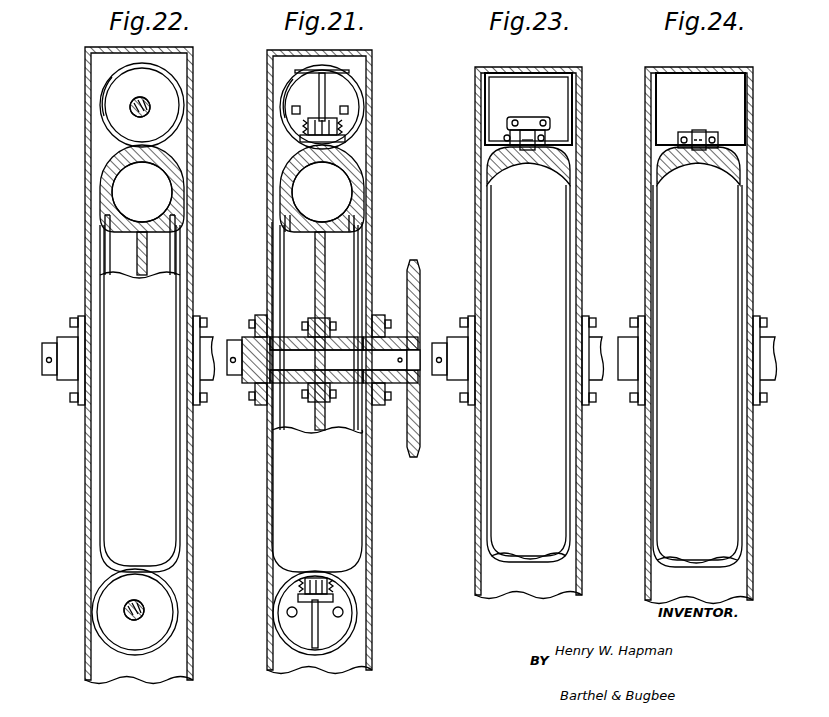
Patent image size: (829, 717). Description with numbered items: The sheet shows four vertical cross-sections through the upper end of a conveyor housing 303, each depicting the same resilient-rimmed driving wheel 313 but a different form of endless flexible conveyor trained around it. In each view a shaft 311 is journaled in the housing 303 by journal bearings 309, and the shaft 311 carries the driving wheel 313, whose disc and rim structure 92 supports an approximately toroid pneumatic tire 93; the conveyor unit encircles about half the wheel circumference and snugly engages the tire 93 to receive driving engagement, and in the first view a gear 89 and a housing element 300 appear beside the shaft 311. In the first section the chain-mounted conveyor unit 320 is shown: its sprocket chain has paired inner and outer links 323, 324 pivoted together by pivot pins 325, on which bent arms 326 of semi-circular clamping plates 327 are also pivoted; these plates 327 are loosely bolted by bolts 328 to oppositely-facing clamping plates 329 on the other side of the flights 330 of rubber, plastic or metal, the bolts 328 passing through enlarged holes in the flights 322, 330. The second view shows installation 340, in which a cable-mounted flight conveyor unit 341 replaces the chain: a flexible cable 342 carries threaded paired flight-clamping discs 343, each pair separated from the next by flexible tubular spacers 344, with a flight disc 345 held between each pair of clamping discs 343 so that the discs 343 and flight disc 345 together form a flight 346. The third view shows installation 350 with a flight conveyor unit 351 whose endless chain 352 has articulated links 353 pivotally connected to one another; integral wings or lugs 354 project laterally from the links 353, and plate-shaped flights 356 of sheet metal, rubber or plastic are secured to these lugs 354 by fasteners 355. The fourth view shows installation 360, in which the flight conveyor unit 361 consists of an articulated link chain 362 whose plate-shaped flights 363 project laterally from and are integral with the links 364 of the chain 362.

In FIG. 21, the gear wheel 89 is at (418, 294).
In FIG. 22, the disc and rim structure 92 is at (134, 254).
In FIG. 21, the disc and rim structure 92 is at (326, 256).
In FIG. 22, the pneumatic tire 93 is at (113, 205).
In FIG. 21, the pneumatic tire 93 is at (352, 192).
In FIG. 21, the housing 300 is at (260, 220).
In FIG. 21, the housing 303 is at (268, 133).
In FIG. 22, the journal bearing 309 is at (63, 336).
In FIG. 21, the journal bearing 309 is at (254, 332).
In FIG. 23, the journal bearing 309 is at (454, 400).
In FIG. 24, the journal bearing 309 is at (624, 336).
In FIG. 21, the shaft 311 is at (322, 360).
In FIG. 22, the driving wheel 313 is at (100, 176).
In FIG. 21, the driving wheel 313 is at (365, 156).
In FIG. 23, the driving wheel 313 is at (548, 236).
In FIG. 24, the driving wheel 313 is at (724, 228).
In FIG. 21, the endless flexible conveyor unit 320 is at (290, 143).
In FIG. 21, the flight 322 is at (287, 82).
In FIG. 21, the inner link 323 is at (323, 118).
In FIG. 21, the outer link 324 is at (338, 104).
In FIG. 21, the pivot pin 325 is at (345, 138).
In FIG. 21, the bent arm 326 is at (340, 128).
In FIG. 21, the semi-circular clamping plate 327 is at (330, 82).
In FIG. 21, the bolt 328 is at (292, 110).
In FIG. 21, the clamping plate 329 is at (296, 628).
In FIG. 21, the flight 330 is at (345, 75).
In FIG. 22, the installation 340 is at (84, 62).
In FIG. 22, the cable-mounted flight conveyor unit 341 is at (106, 140).
In FIG. 22, the cable 342 is at (130, 110).
In FIG. 22, the flight-clamping disc 343 is at (113, 97).
In FIG. 22, the tubular spacer 344 is at (135, 112).
In FIG. 22, the flight disc 345 is at (107, 84).
In FIG. 22, the flight 346 is at (174, 74).
In FIG. 23, the installation 350 is at (578, 72).
In FIG. 23, the flight conveyor unit 351 is at (562, 106).
In FIG. 23, the chain 352 is at (507, 121).
In FIG. 23, the link 353 is at (528, 165).
In FIG. 23, the lug 354 is at (536, 122).
In FIG. 23, the fastener 355 is at (552, 123).
In FIG. 23, the flight 356 is at (492, 78).
In FIG. 24, the installation 360 is at (750, 72).
In FIG. 24, the flight conveyor unit 361 is at (740, 152).
In FIG. 24, the link chain 362 is at (720, 138).
In FIG. 24, the flight 363 is at (728, 100).
In FIG. 24, the link 364 is at (699, 130).